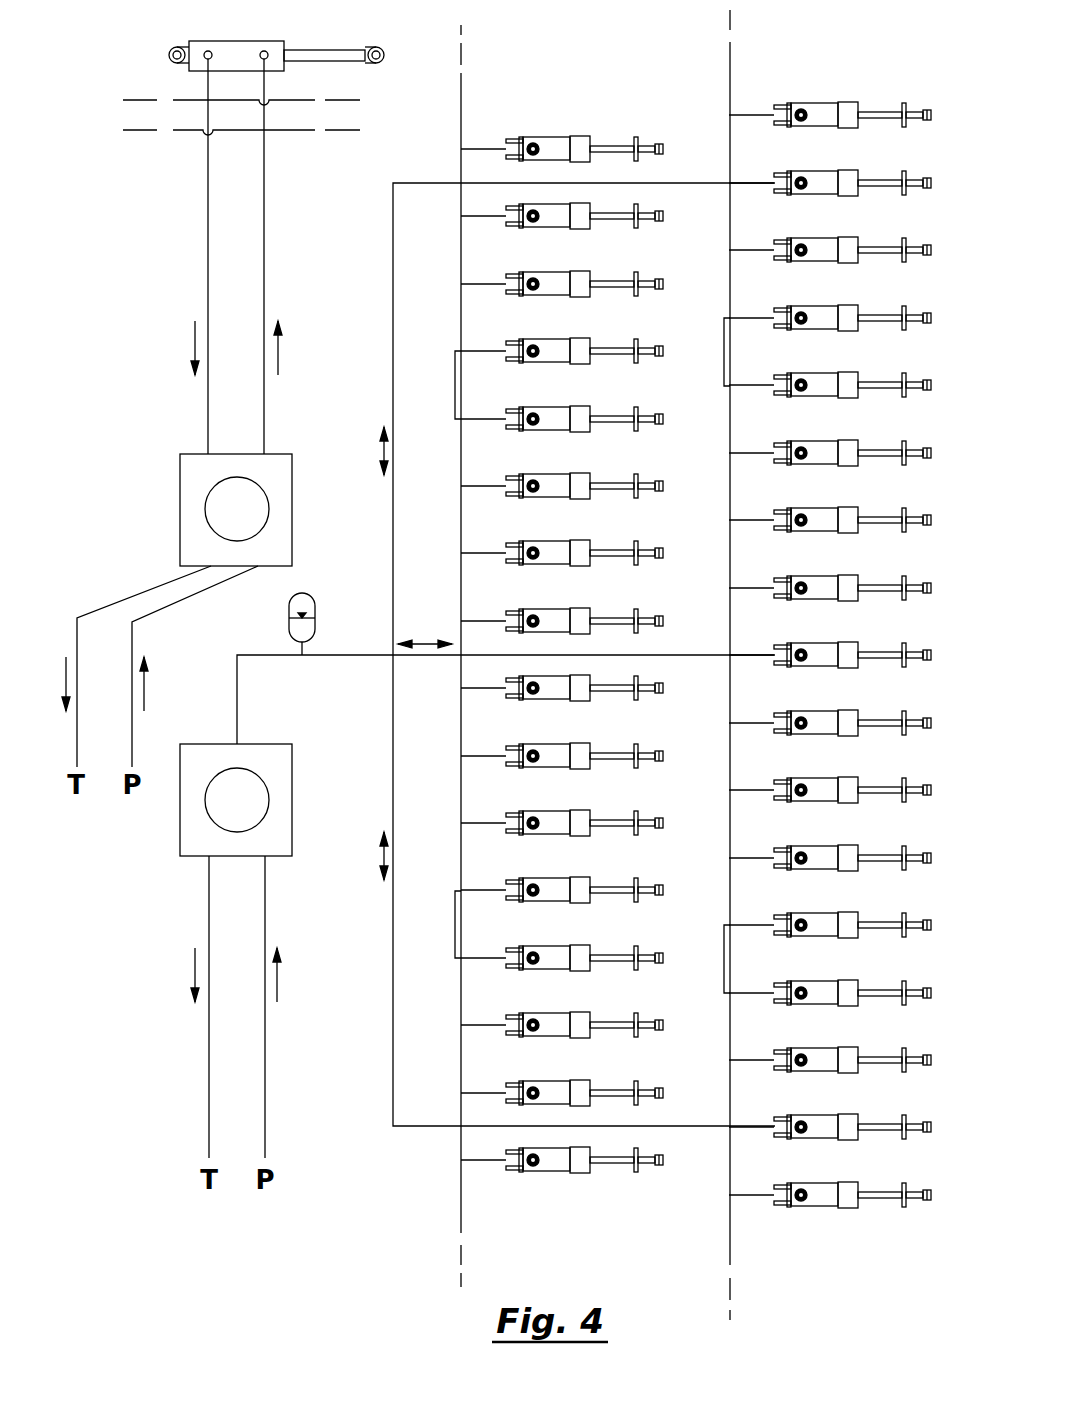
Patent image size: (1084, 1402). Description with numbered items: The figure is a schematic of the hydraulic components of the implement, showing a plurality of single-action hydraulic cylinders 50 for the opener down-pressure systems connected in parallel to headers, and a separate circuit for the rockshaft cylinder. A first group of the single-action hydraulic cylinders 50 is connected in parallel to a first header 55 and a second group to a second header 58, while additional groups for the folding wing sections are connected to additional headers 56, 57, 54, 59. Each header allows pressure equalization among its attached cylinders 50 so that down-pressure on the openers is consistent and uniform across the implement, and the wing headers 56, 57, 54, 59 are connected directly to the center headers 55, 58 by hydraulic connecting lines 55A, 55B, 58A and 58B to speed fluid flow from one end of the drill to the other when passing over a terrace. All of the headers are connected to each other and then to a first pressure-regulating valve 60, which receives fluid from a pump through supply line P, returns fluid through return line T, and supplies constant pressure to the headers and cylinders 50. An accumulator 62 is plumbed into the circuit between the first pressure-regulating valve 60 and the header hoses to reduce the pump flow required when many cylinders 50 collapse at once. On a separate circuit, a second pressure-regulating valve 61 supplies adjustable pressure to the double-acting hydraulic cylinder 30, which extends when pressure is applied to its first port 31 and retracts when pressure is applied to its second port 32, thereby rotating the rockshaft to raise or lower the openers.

The double-acting hydraulic cylinder 30 is at (243, 45).
The first port 31 is at (203, 50).
The second port 32 is at (269, 50).
The single-action hydraulic cylinder 50 is at (550, 140).
The header 54 is at (461, 1182).
The first header 55 is at (461, 787).
The hydraulic connecting line 55A is at (457, 926).
The hydraulic connecting line 55B is at (456, 386).
The header 56 is at (461, 133).
The header 57 is at (728, 1222).
The second header 58 is at (730, 765).
The hydraulic connecting line 58A is at (726, 960).
The hydraulic connecting line 58B is at (726, 353).
The header 59 is at (730, 82).
The first pressure-regulating valve 60 is at (190, 830).
The second pressure-regulating valve 61 is at (190, 472).
The accumulator 62 is at (315, 605).